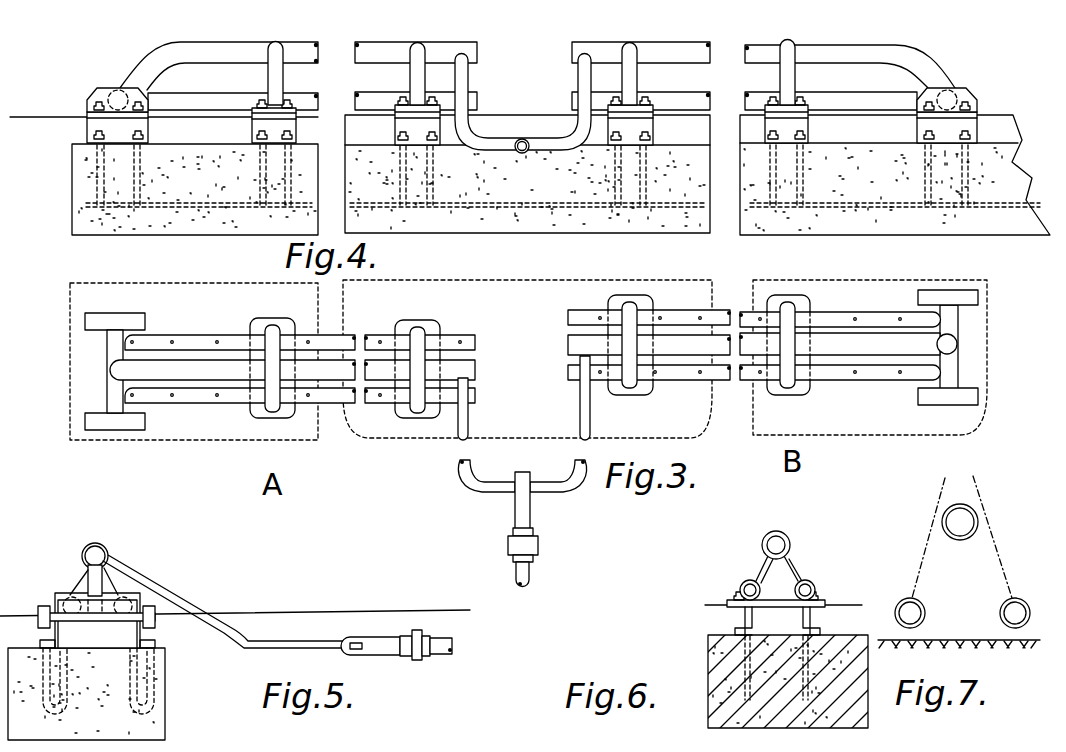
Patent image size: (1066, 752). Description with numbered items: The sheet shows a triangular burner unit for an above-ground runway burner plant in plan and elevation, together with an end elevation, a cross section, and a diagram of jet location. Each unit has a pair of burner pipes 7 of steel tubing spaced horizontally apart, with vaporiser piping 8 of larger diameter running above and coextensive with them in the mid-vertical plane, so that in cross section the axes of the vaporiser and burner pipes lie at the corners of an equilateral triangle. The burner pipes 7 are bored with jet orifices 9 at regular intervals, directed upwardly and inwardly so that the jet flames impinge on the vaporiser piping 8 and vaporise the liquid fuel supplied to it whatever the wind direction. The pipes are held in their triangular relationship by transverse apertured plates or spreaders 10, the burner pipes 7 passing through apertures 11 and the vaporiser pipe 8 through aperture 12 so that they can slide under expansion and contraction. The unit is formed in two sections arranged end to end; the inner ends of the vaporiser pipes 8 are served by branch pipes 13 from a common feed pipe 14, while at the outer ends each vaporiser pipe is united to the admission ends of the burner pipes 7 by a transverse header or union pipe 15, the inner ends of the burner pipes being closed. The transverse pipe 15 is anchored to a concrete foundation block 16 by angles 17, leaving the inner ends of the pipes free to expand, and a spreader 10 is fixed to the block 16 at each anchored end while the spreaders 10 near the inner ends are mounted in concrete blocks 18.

In FIG. 4, the burner pipes 7 is at (570, 100).
In FIG. 3, the burner pipes 7 is at (476, 395).
In FIG. 6, the burner pipes 7 is at (740, 590).
In FIG. 7, the burner pipes 7 is at (1003, 605).
In FIG. 4, the vaporiser piping 8 is at (374, 57).
In FIG. 3, the vaporiser piping 8 is at (336, 370).
In FIG. 5, the vaporiser piping 8 is at (90, 578).
In FIG. 6, the vaporiser piping 8 is at (777, 531).
In FIG. 7, the vaporiser piping 8 is at (961, 540).
In FIG. 3, the jet orifices 9 is at (217, 342).
In FIG. 4, the spreaders 10 is at (268, 78).
In FIG. 6, the spreaders 10 is at (760, 551).
In FIG. 6, the apertures 11 is at (800, 590).
In FIG. 6, the aperture 12 is at (791, 546).
In FIG. 4, the branch pipes 13 is at (583, 73).
In FIG. 3, the branch pipes 13 is at (468, 420).
In FIG. 5, the branch pipes 13 is at (196, 613).
In FIG. 4, the feed pipe 14 is at (522, 139).
In FIG. 3, the feed pipe 14 is at (515, 512).
In FIG. 5, the feed pipe 14 is at (380, 658).
In FIG. 4, the transverse pipe 15 is at (116, 97).
In FIG. 3, the transverse pipe 15 is at (107, 393).
In FIG. 5, the transverse pipe 15 is at (96, 620).
In FIG. 4, the concrete foundation block 16 is at (197, 237).
In FIG. 5, the concrete foundation block 16 is at (165, 660).
In FIG. 4, the angles 17 is at (96, 128).
In FIG. 3, the angles 17 is at (112, 318).
In FIG. 5, the angles 17 is at (140, 598).
In FIG. 4, the concrete blocks 18 is at (529, 236).